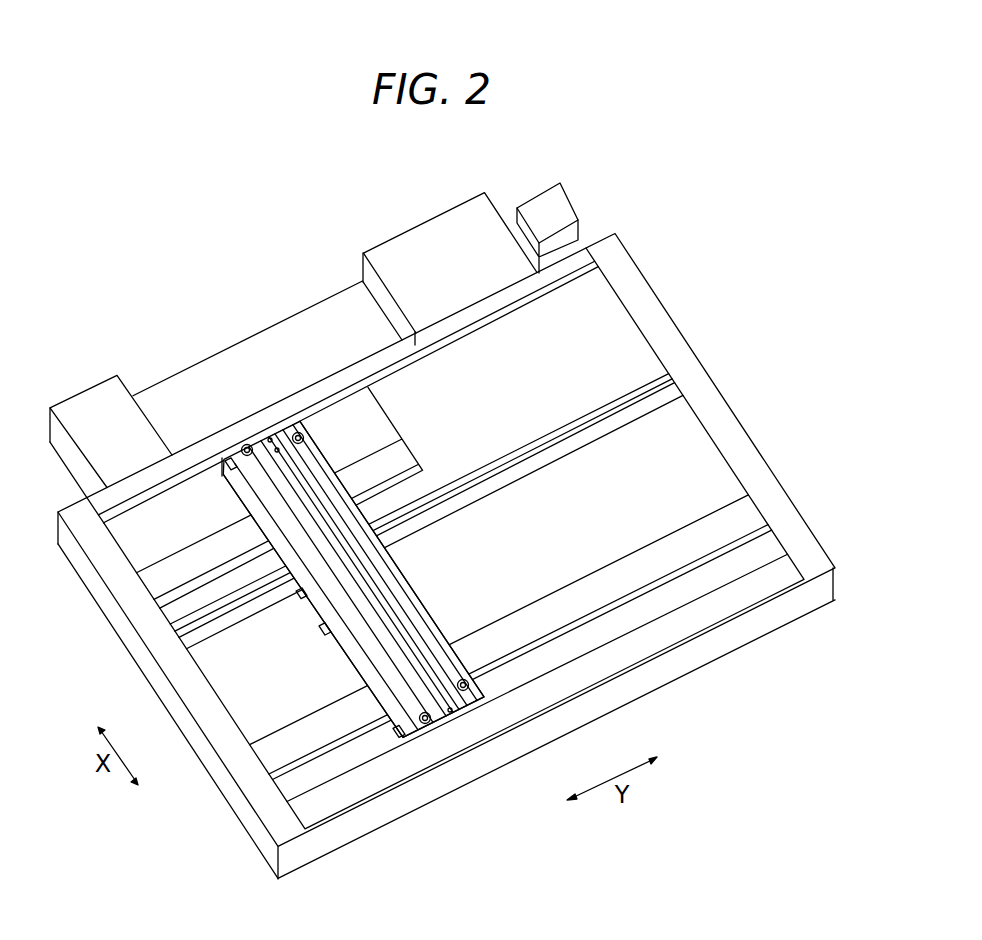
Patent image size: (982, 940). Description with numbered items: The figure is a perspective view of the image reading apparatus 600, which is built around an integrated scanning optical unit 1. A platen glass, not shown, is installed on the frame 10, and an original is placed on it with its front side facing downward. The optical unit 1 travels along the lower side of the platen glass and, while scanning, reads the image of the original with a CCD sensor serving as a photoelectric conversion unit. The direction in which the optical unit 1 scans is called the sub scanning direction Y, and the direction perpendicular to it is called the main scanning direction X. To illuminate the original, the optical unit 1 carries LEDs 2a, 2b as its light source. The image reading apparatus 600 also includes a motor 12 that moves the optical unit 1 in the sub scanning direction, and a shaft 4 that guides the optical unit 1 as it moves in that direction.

The image reading apparatus 600 is at (286, 274).
The frame 10 is at (752, 467).
The motor 12 is at (553, 210).
The shaft 4 is at (617, 405).
The integrated scanning optical unit 1 is at (392, 677).
The LED 2a is at (422, 688).
The LED 2b is at (438, 668).